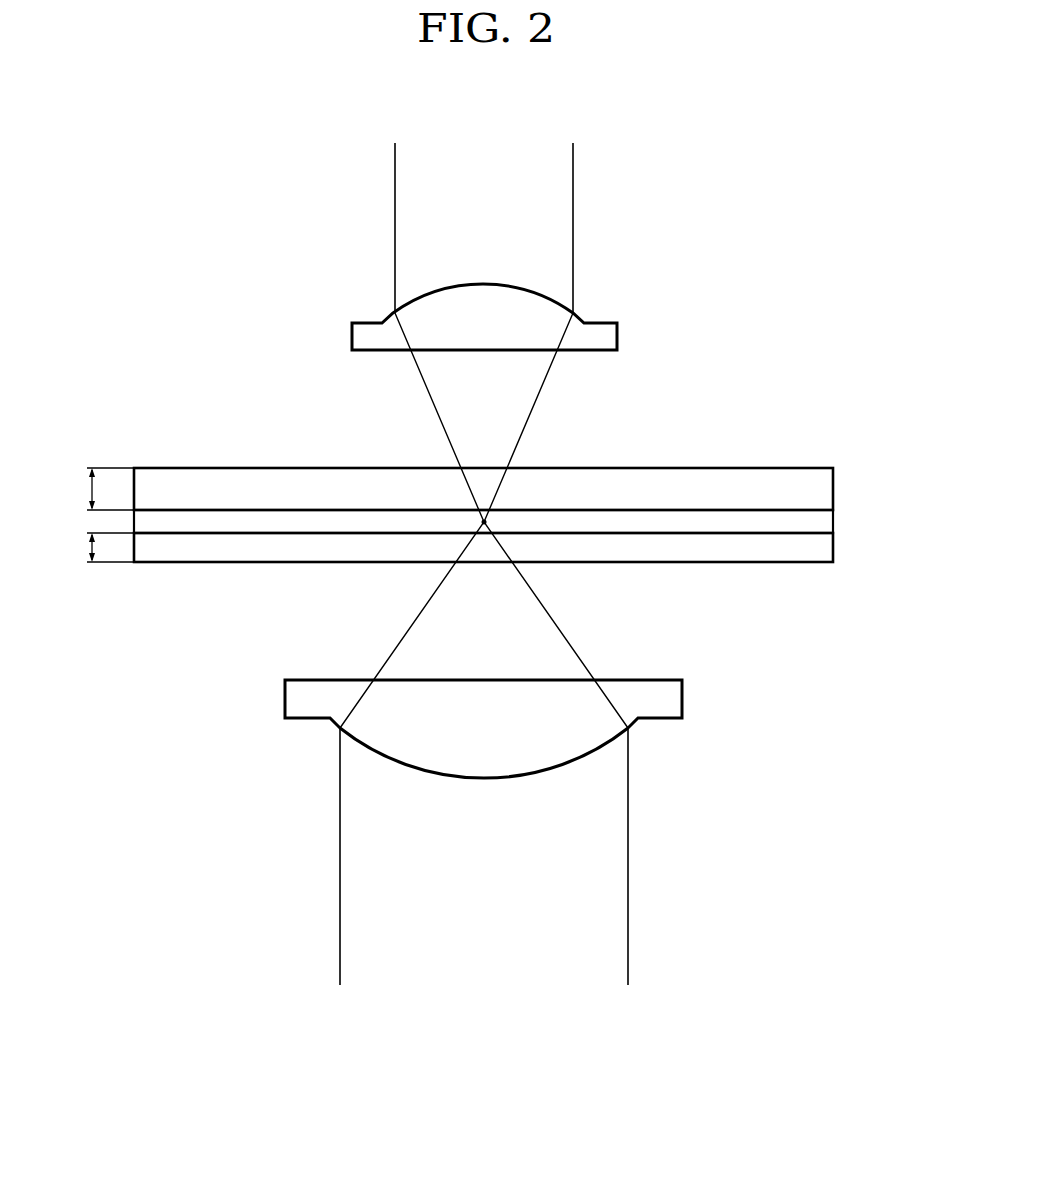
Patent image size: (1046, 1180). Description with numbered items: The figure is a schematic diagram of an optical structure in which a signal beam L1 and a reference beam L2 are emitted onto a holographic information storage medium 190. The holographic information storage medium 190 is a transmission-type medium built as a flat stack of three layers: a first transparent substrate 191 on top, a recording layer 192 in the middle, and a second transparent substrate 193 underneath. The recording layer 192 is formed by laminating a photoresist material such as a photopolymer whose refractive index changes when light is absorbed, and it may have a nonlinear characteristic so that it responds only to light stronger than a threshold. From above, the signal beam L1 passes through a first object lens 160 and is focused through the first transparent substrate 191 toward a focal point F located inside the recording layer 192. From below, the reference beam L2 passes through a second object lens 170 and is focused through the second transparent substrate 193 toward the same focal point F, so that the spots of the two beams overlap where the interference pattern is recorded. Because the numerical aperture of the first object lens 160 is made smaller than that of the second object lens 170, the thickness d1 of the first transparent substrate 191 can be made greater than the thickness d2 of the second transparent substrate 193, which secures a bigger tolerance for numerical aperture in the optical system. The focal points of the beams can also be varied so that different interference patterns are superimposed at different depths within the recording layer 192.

The first object lens 160 is at (617, 338).
The second object lens 170 is at (682, 698).
The holographic information storage medium 190 is at (537, 478).
The first transparent substrate 191 is at (833, 490).
The recording layer 192 is at (833, 523).
The second transparent substrate 193 is at (833, 548).
The signal beam L1 is at (574, 235).
The reference beam L2 is at (629, 858).
The focal point F is at (484, 522).
The thickness of first transparent substrate d1 is at (95, 489).
The thickness of second transparent substrate d2 is at (95, 547).